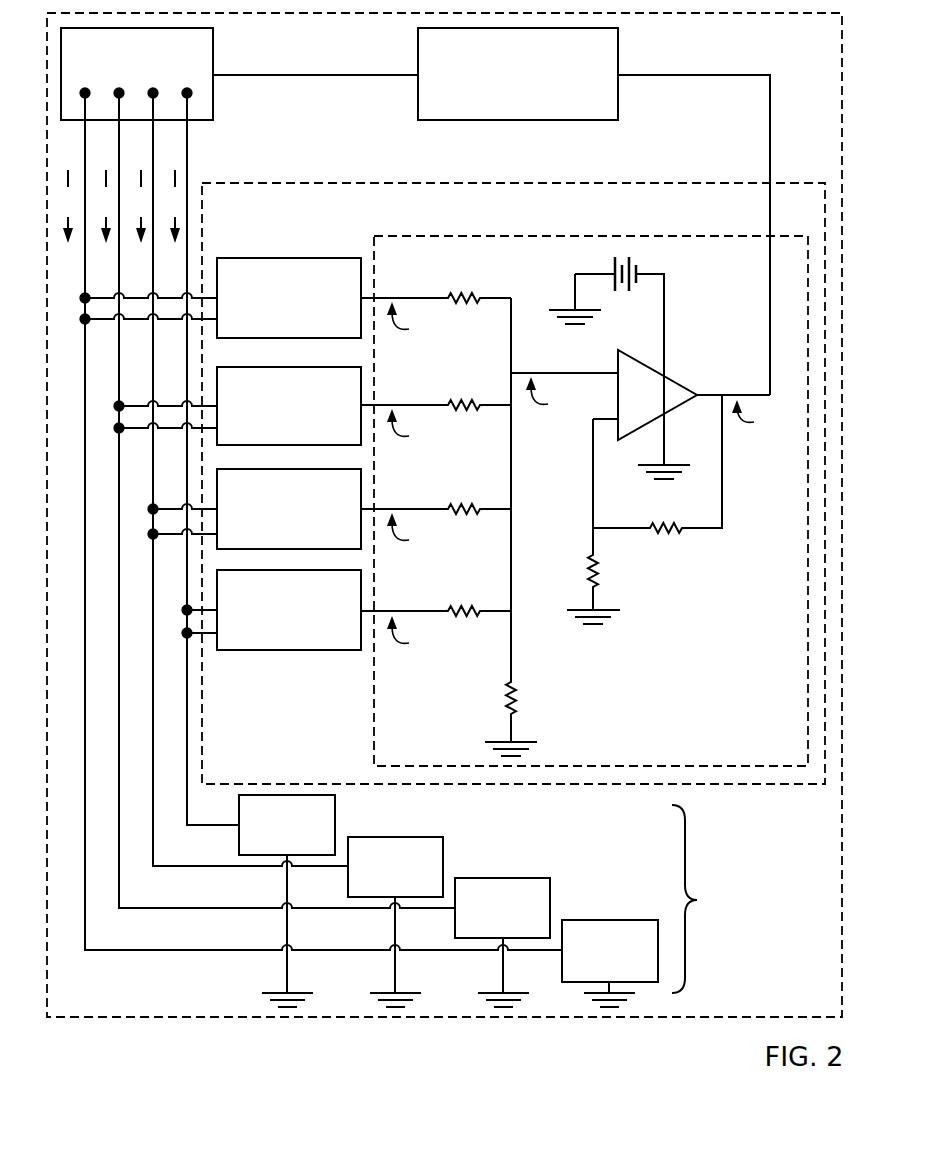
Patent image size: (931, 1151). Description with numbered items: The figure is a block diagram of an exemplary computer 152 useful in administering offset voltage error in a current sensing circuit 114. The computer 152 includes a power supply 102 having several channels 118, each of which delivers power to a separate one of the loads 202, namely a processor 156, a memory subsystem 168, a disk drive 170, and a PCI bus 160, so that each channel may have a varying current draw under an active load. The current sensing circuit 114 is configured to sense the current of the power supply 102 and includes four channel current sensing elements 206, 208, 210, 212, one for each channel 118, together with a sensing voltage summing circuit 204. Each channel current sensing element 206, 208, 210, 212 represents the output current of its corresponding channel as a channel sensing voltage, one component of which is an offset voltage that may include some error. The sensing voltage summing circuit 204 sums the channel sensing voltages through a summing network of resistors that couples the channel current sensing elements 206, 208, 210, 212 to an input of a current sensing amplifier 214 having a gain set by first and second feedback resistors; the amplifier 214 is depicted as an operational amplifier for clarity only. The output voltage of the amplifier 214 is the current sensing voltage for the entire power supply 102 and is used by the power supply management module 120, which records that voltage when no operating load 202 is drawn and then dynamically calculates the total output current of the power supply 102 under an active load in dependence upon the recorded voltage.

The power supply 102 is at (137, 74).
The power supply management module 120 is at (491, 211).
The channels 118 is at (195, 150).
The current sensing circuit 114 is at (513, 483).
The channel current sensing element 206 is at (289, 298).
The channel current sensing element 208 is at (289, 406).
The channel current sensing element 210 is at (289, 509).
The channel current sensing element 212 is at (289, 610).
The sensing voltage summing circuit 204 is at (584, 501).
The current sensing amplifier 214 is at (672, 368).
The processor 156 is at (287, 901).
The memory subsystem 168 is at (395, 922).
The disk drive 170 is at (502, 942).
The PCI bus 160 is at (610, 963).
The loads 202 is at (709, 899).
The computer 152 is at (444, 515).